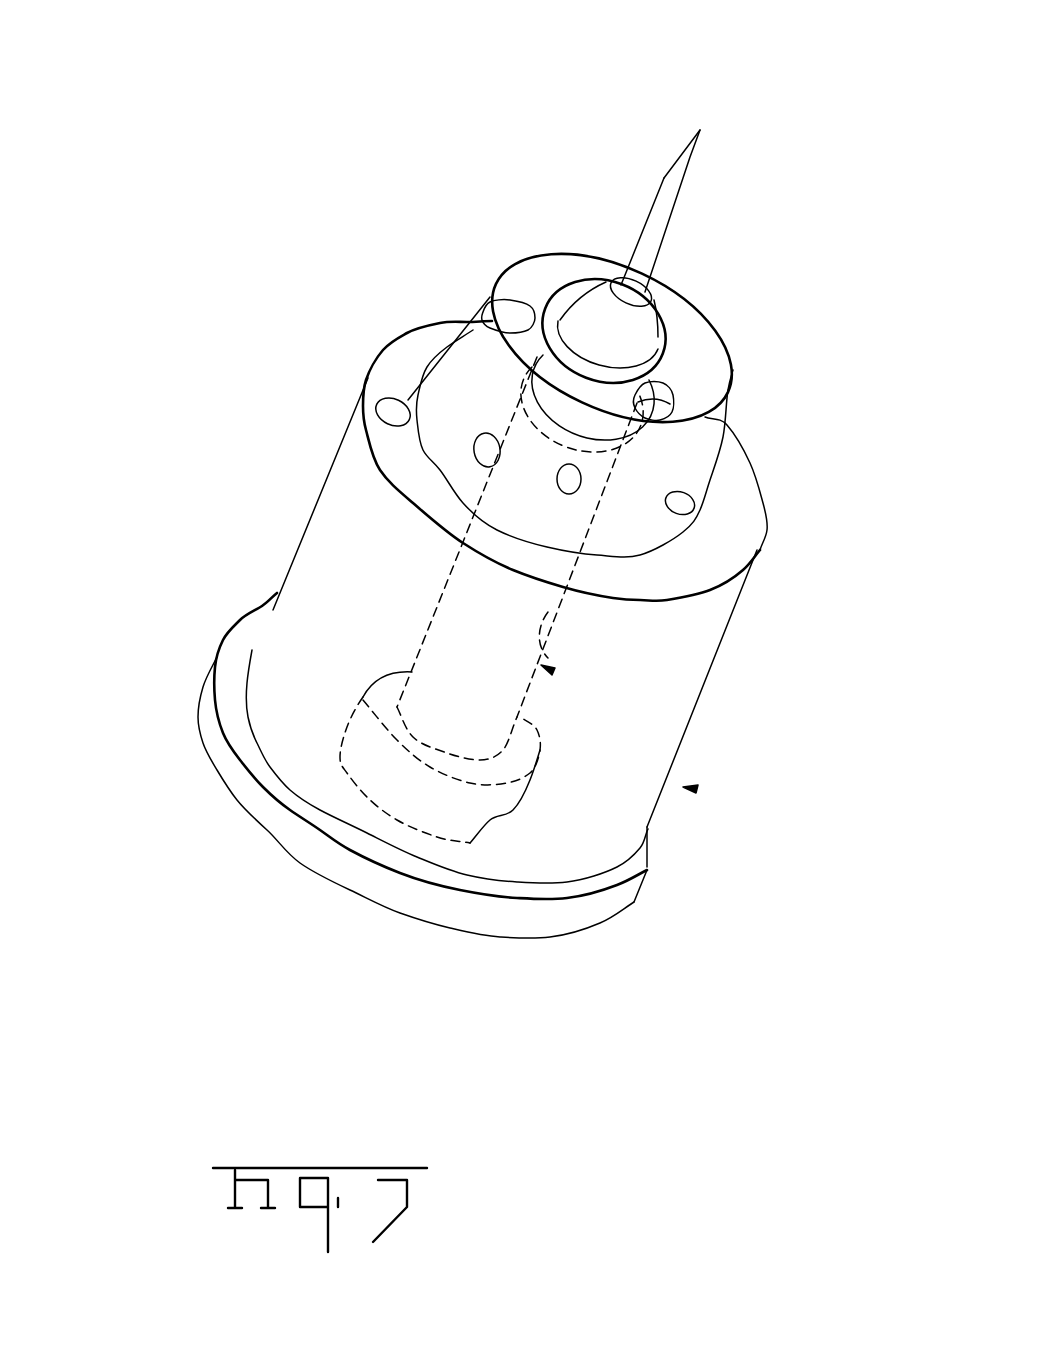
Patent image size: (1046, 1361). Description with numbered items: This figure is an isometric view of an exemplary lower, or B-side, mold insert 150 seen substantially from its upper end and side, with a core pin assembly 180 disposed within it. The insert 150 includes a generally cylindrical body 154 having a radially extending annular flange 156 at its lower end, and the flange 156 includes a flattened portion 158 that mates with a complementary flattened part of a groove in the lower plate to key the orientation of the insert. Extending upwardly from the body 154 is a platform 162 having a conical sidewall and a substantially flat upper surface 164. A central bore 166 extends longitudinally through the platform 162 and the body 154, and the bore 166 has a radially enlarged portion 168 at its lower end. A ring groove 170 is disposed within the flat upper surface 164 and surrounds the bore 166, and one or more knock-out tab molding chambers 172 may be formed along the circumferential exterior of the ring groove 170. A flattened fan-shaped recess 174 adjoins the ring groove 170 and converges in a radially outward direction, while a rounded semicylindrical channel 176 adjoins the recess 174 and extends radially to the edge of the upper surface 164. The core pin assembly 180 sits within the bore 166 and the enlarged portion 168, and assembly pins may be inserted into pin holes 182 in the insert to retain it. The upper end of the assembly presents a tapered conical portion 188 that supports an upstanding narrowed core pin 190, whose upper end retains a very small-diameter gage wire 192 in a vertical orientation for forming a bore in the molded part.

The B-side mold insert 150 is at (703, 788).
The cylindrical body 154 is at (347, 560).
The annular flange 156 is at (233, 776).
The flattened portion 158 is at (640, 897).
The platform 162 is at (727, 413).
The upper surface 164 is at (705, 355).
The central bore 166 is at (543, 653).
The radially enlarged portion 168 is at (463, 842).
The ring groove 170 is at (655, 320).
The knock-out tab molding chamber 172 is at (738, 392).
The fan-shaped recess 174 is at (603, 313).
The semicylindrical channel 176 is at (490, 307).
The core pin assembly 180 is at (557, 673).
The pin holes 182 is at (487, 447).
The tapered conical portion 188 is at (587, 313).
The core pin 190 is at (662, 207).
The gage wire 192 is at (700, 141).